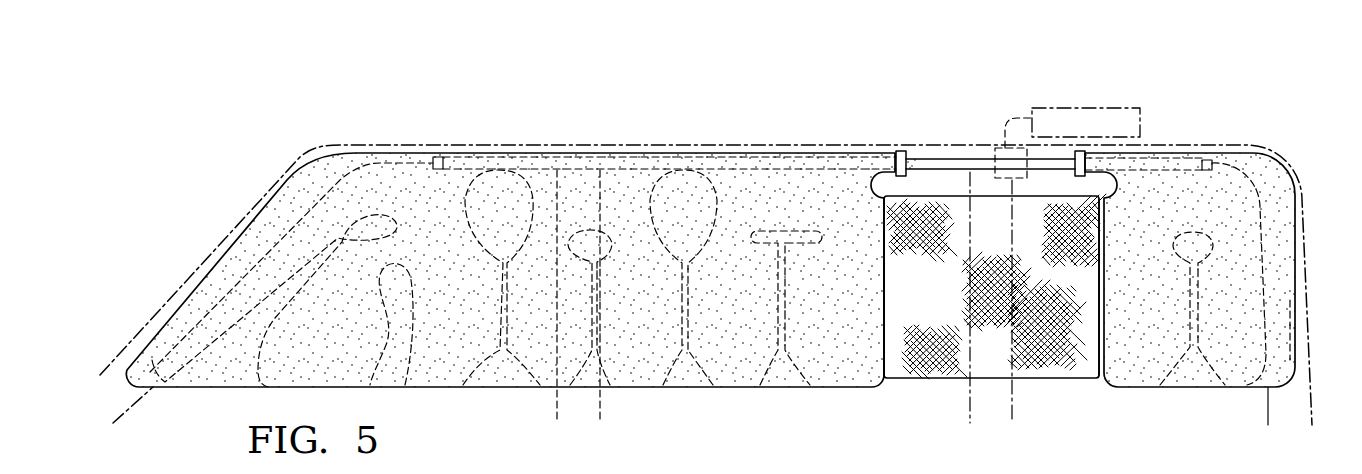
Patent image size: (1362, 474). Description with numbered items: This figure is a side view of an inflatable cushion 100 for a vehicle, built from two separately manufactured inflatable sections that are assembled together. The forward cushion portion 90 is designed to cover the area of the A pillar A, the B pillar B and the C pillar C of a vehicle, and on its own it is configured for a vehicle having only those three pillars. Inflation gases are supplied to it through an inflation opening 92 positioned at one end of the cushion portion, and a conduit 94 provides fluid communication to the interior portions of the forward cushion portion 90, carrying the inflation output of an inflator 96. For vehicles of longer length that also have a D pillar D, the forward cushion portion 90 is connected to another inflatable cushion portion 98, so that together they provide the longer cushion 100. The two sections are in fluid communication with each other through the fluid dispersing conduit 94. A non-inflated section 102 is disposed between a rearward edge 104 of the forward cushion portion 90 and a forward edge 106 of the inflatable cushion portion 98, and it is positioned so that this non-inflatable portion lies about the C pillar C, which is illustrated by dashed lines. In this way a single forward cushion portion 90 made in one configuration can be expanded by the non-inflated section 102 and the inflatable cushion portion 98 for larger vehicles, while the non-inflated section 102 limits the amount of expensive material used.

The forward cushion portion 90 is at (658, 152).
The inflation opening 92 is at (920, 157).
The conduit 94 is at (970, 163).
The inflator 96 is at (1125, 110).
The inflatable cushion portion 98 is at (1227, 152).
The inflatable cushion 100 is at (1209, 77).
The non-inflated section 102 is at (1040, 380).
The rearward edge 104 is at (884, 378).
The forward edge 106 is at (1097, 378).
The A pillar A is at (158, 310).
The B pillar B is at (567, 398).
The C pillar C is at (977, 387).
The D pillar D is at (1307, 293).